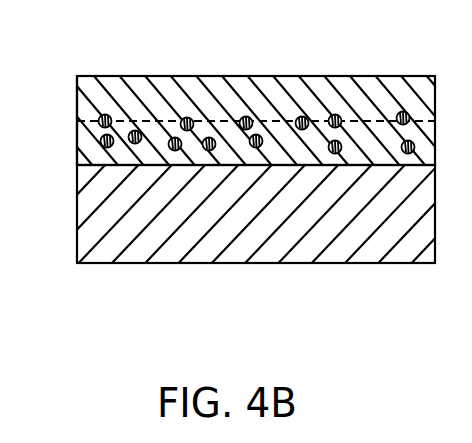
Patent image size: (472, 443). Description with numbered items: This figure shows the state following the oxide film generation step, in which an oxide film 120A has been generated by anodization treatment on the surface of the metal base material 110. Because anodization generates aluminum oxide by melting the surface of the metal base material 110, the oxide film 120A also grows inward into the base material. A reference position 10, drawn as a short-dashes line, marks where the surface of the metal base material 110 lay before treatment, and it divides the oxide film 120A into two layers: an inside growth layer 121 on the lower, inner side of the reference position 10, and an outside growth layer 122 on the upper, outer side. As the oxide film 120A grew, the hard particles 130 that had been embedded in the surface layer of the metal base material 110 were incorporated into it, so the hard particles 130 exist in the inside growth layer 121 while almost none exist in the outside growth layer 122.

The metal base material 110 is at (305, 242).
The oxide film 120A is at (145, 82).
The outside growth layer 122 is at (76, 93).
The inside growth layer 121 is at (76, 150).
The reference position 10 is at (77, 121).
The hard particles 130 is at (211, 137).